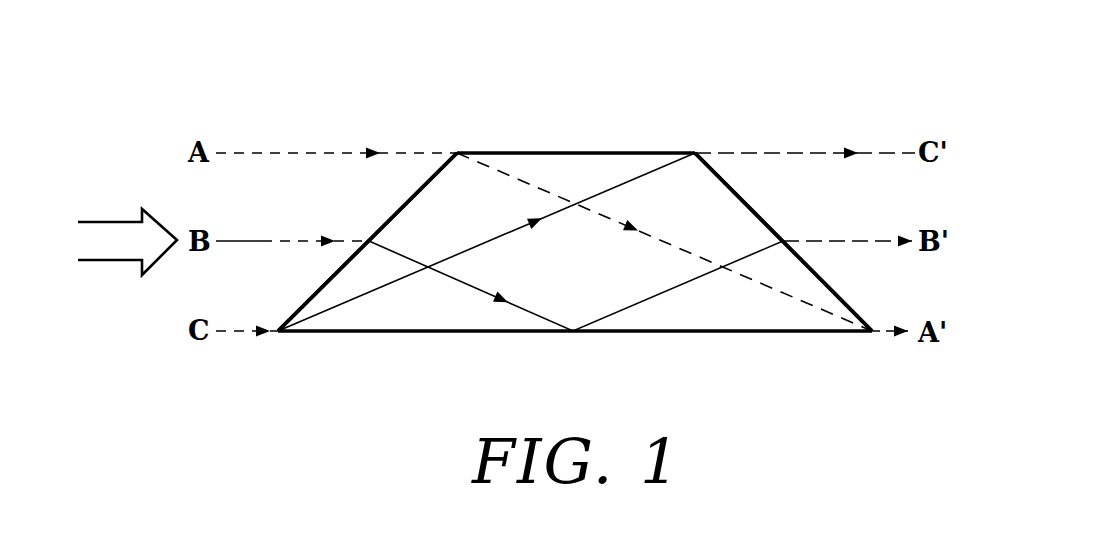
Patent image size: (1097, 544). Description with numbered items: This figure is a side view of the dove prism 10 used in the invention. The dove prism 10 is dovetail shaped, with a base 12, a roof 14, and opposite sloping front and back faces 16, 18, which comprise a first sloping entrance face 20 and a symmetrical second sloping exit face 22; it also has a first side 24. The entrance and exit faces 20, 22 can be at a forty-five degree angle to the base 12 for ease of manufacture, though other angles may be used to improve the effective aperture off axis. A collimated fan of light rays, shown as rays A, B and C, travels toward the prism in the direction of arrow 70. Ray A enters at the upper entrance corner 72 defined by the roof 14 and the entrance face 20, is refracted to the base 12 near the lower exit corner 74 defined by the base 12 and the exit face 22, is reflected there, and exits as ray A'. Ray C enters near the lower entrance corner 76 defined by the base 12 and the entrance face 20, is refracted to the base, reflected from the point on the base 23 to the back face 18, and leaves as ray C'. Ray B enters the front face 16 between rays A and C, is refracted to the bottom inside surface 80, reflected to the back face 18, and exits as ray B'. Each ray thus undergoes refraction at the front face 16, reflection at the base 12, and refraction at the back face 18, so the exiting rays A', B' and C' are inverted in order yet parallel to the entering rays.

The dove prism 10 is at (745, 92).
The base 12 is at (762, 335).
The roof 14 is at (581, 152).
The front face 16 is at (410, 198).
The back face 18 is at (746, 198).
The first sloping entrance face 20 is at (418, 175).
The second sloping exit face 22 is at (845, 288).
The point on the base 23 is at (276, 327).
The first side 24 is at (593, 263).
The arrow 70 is at (100, 228).
The upper entrance corner 72 is at (456, 152).
The lower exit corner 74 is at (868, 342).
The lower entrance corner 76 is at (281, 342).
The bottom inside surface 80 is at (573, 331).